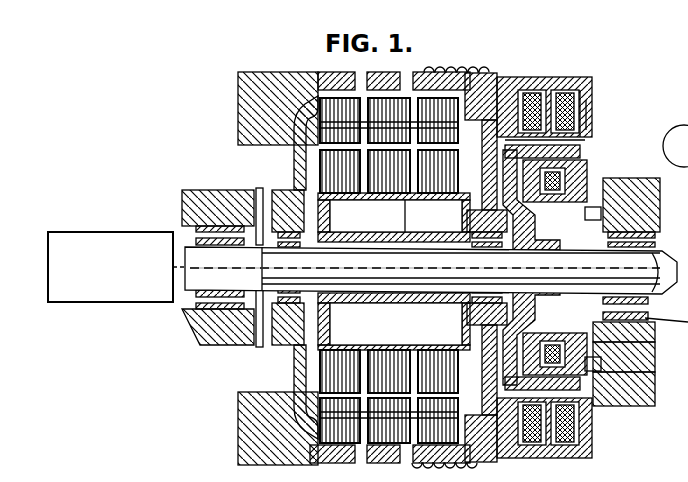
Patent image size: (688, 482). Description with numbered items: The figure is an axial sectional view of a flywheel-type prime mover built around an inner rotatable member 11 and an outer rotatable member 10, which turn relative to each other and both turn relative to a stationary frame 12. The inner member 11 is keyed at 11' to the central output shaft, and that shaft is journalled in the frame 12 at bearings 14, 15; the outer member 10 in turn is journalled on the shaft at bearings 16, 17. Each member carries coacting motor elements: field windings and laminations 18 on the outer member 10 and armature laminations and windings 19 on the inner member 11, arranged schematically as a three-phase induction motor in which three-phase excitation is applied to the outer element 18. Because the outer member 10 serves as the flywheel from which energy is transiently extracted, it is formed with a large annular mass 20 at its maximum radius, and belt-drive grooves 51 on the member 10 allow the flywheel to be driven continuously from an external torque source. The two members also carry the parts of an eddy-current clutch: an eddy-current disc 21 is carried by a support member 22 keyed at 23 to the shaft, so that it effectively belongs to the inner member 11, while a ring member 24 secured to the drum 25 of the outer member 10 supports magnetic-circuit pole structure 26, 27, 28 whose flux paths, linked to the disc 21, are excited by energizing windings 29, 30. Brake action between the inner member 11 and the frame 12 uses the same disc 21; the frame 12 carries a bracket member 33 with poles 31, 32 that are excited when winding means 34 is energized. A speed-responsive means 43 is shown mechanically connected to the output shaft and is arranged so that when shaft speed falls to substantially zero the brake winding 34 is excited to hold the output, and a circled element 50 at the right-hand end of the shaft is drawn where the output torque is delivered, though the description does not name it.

The outer rotatable member 10 is at (322, 61).
The inner rotatable member 11 is at (261, 221).
The key 11' is at (415, 221).
The frame 12 is at (215, 205).
The bearing 14 is at (205, 228).
The bearing 15 is at (640, 239).
The bearing 16 is at (278, 332).
The bearing 17 is at (448, 308).
The field windings and laminations 18 is at (392, 104).
The armature laminations and windings 19 is at (394, 216).
The annular mass 20 is at (238, 100).
The eddy-current disc 21 is at (586, 152).
The support member 22 is at (533, 318).
The key 23 is at (566, 253).
The ring member 24 is at (585, 80).
The drum 25 is at (473, 82).
The magnetic-circuit pole structure 26 is at (590, 98).
The magnetic-circuit pole structure 27 is at (590, 116).
The magnetic-circuit pole structure 28 is at (588, 141).
The energizing winding 29 is at (531, 92).
The energizing winding 30 is at (566, 92).
The brake pole 31 is at (595, 392).
The brake pole 32 is at (595, 366).
The bracket member 33 is at (610, 338).
The brake winding means 34 is at (552, 352).
The speed-responsive means 43 is at (95, 232).
The load 50 is at (675, 146).
The belt-drive grooves 51 is at (455, 78).